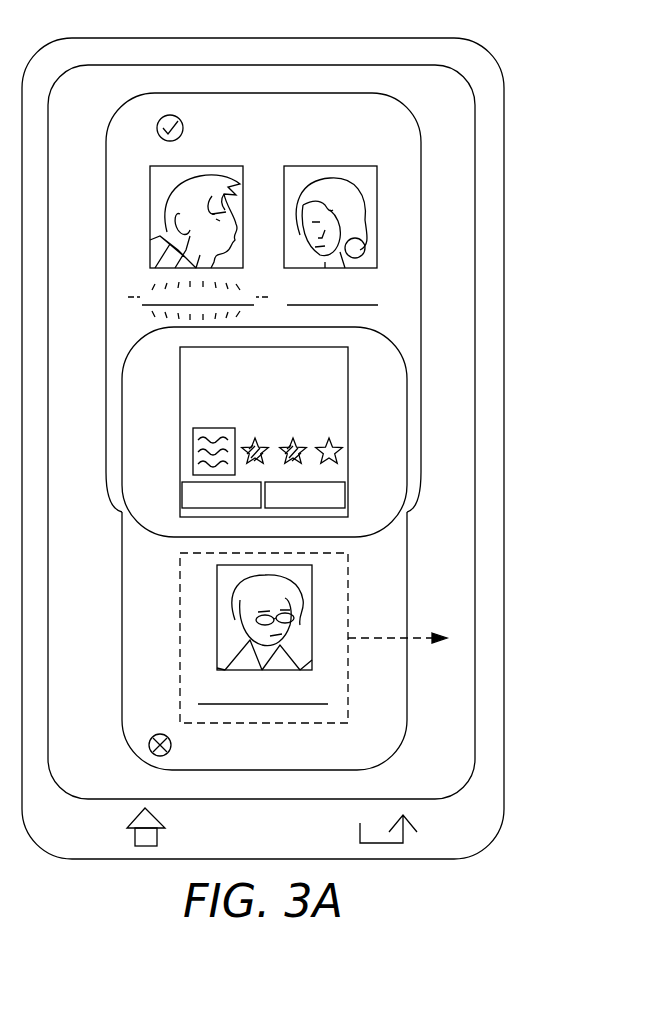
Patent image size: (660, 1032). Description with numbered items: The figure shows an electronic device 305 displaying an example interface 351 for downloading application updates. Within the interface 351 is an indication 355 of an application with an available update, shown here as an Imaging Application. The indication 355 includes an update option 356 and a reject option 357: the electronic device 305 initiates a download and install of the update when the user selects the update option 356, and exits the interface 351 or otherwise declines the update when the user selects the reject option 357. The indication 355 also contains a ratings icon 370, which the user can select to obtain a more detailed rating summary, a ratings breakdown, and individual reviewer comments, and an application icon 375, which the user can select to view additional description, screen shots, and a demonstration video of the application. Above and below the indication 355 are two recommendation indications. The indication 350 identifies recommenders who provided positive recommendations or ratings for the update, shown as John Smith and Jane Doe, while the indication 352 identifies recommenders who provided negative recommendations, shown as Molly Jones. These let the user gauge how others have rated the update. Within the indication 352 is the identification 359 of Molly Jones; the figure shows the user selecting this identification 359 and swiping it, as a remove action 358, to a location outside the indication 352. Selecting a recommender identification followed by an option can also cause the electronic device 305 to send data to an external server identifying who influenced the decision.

The electronic device 305 is at (503, 138).
The interface 351 is at (457, 203).
The indication 350 is at (392, 118).
The indication 352 is at (130, 684).
The indication 355 is at (348, 417).
The ratings icon 370 is at (294, 444).
The application icon 375 is at (193, 437).
The update option 356 is at (192, 482).
The reject option 357 is at (338, 482).
The remove 358 is at (380, 637).
The identification 359 is at (217, 630).